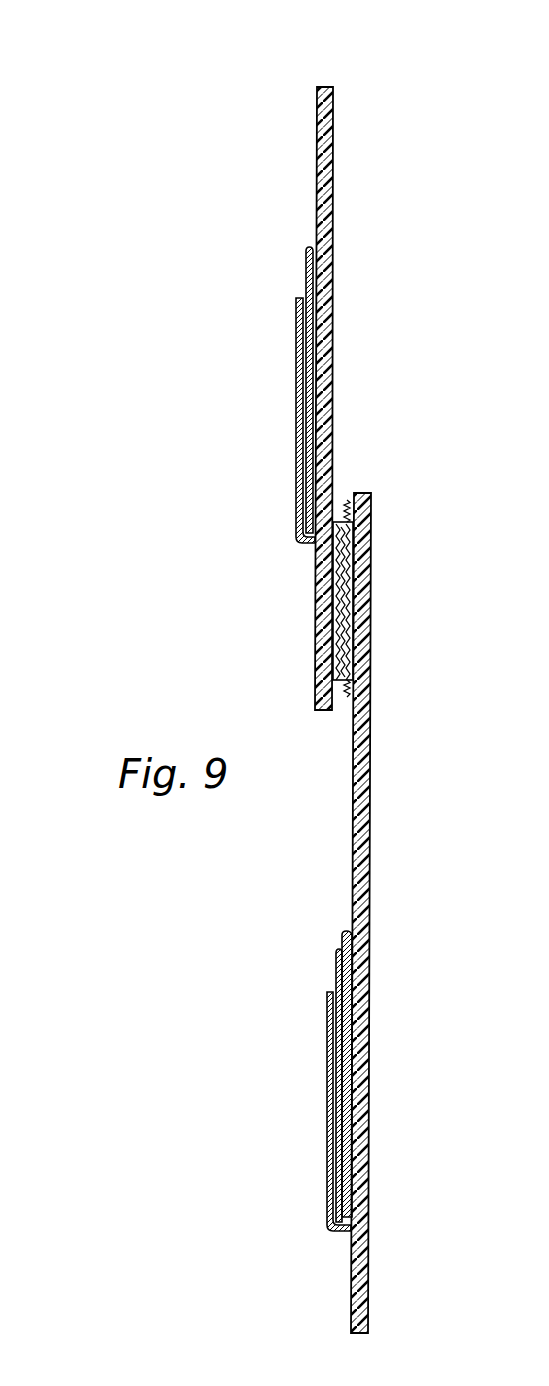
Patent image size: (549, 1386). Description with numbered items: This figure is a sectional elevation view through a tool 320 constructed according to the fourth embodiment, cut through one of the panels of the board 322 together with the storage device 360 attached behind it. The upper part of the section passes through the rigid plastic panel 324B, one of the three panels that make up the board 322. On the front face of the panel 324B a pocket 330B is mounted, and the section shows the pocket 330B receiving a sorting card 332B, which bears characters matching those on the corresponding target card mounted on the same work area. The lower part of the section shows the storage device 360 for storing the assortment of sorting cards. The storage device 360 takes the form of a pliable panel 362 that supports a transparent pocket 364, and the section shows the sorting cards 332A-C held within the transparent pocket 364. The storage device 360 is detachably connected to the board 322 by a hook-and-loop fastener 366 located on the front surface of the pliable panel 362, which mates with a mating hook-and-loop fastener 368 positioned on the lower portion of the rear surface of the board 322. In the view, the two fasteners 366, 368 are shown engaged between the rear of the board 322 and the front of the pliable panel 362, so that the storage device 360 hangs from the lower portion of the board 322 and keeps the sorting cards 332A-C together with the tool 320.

The tool 320 is at (329, 680).
The board 322 is at (308, 369).
The panel 324B is at (334, 90).
The sorting card 332B is at (306, 266).
The pocket 330B is at (296, 490).
The hook-and-loop fastener 366 is at (347, 498).
The mating hook-and-loop fastener 368 is at (333, 603).
The storage device 360 is at (331, 913).
The pliable panel 362 is at (371, 878).
The sorting cards 332A-C is at (337, 975).
The transparent pocket 364 is at (328, 1092).